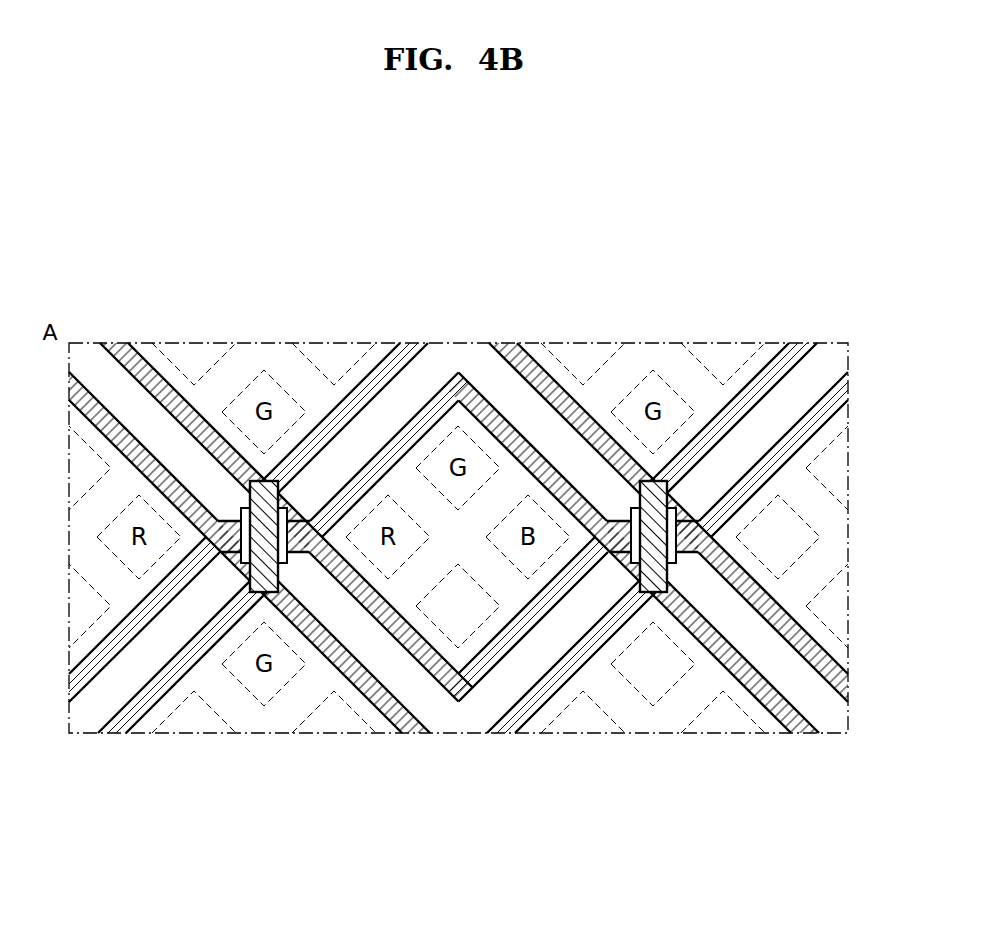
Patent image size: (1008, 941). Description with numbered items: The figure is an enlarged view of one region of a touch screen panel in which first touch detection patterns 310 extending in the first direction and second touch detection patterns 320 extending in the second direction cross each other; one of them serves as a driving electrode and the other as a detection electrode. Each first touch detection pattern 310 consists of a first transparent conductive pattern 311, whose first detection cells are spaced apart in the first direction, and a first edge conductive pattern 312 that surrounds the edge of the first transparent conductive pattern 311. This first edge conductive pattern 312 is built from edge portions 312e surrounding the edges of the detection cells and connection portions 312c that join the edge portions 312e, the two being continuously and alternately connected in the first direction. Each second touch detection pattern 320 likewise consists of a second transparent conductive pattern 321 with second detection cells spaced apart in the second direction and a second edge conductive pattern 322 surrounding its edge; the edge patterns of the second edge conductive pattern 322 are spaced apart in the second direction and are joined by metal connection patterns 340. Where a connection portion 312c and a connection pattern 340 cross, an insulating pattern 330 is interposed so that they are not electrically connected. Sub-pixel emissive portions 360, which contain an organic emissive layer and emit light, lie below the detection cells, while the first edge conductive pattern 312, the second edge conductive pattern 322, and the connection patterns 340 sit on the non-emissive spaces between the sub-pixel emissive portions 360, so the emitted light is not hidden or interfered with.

The first touch detection pattern 310 is at (667, 451).
The first transparent conductive pattern 311 is at (815, 503).
The first edge conductive pattern 312 is at (667, 480).
The connection portion 312c is at (687, 521).
The edge portion 312e is at (770, 457).
The second touch detection pattern 320 is at (707, 744).
The second transparent conductive pattern 321 is at (653, 716).
The second edge conductive pattern 322 is at (797, 724).
The insulating pattern 330 is at (613, 556).
The connection pattern 340 is at (273, 573).
The sub-pixel emissive portion 360 is at (437, 628).